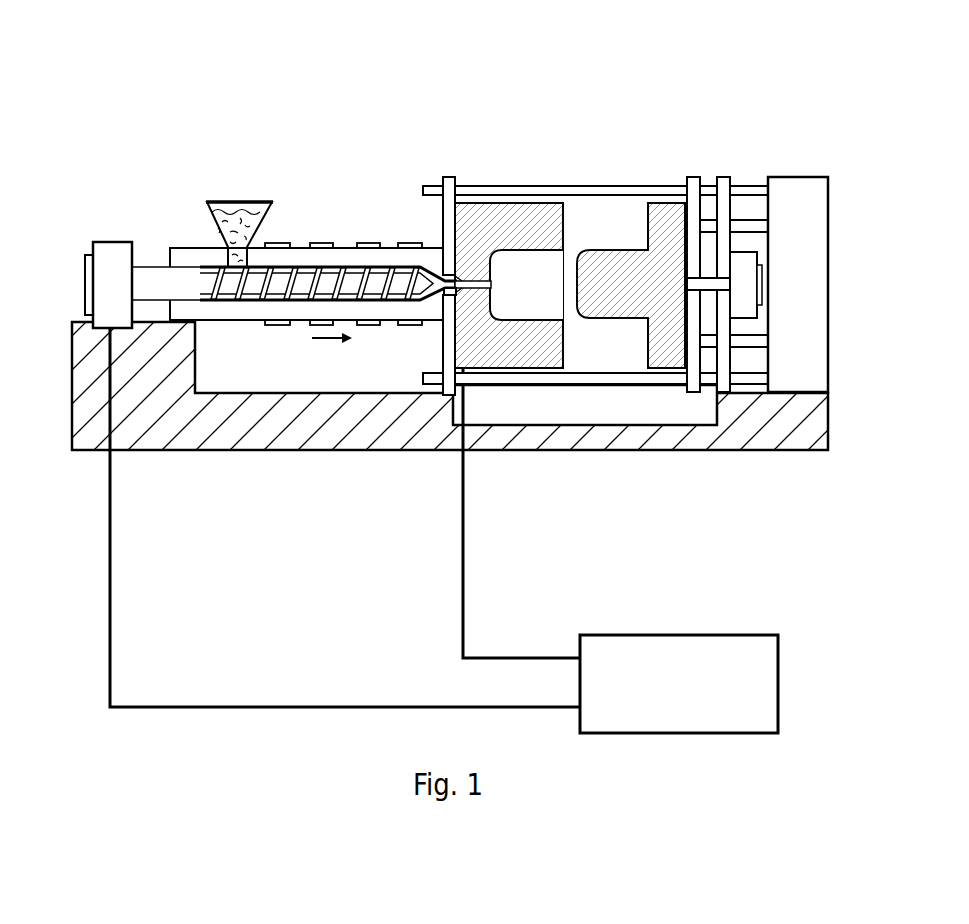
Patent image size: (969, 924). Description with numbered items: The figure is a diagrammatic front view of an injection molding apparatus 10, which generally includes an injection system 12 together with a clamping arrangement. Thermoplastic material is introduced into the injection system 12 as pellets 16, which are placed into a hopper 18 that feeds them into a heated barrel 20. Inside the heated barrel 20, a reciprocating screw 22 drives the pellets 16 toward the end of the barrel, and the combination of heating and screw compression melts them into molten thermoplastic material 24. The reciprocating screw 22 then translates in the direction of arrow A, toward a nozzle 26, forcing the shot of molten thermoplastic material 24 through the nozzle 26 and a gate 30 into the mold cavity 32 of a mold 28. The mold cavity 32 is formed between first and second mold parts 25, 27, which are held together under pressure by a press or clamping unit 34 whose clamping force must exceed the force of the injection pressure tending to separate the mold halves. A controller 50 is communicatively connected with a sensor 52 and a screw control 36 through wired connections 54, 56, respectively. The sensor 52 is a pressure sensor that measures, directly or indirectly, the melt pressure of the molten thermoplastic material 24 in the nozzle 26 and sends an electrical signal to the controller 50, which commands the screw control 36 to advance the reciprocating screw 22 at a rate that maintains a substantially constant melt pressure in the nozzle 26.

The injection molding apparatus 10 is at (417, 55).
The injection system 12 is at (282, 368).
The pellets 16 is at (230, 227).
The hopper 18 is at (215, 200).
The heated barrel 20 is at (346, 237).
The reciprocating screw 22 is at (247, 292).
The molten thermoplastic material 24 is at (392, 271).
The first mold part 25 is at (510, 355).
The nozzle 26 is at (460, 273).
The second mold part 27 is at (632, 303).
The mold 28 is at (569, 190).
The gate 30 is at (480, 281).
The mold cavity 32 is at (528, 260).
The clamping unit 34 is at (775, 158).
The screw control 36 is at (105, 242).
The controller 50 is at (742, 635).
The sensor 52 is at (447, 296).
The wired connection 54 is at (518, 657).
The wired connection 56 is at (337, 705).